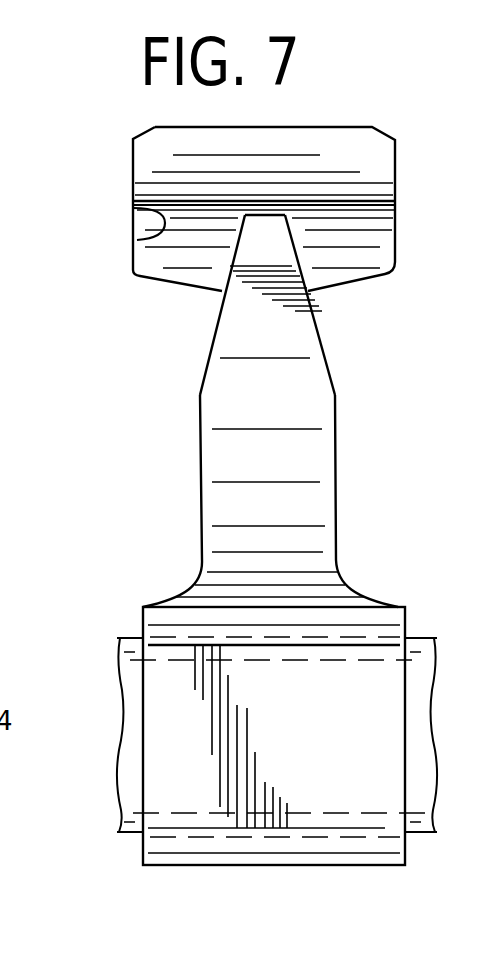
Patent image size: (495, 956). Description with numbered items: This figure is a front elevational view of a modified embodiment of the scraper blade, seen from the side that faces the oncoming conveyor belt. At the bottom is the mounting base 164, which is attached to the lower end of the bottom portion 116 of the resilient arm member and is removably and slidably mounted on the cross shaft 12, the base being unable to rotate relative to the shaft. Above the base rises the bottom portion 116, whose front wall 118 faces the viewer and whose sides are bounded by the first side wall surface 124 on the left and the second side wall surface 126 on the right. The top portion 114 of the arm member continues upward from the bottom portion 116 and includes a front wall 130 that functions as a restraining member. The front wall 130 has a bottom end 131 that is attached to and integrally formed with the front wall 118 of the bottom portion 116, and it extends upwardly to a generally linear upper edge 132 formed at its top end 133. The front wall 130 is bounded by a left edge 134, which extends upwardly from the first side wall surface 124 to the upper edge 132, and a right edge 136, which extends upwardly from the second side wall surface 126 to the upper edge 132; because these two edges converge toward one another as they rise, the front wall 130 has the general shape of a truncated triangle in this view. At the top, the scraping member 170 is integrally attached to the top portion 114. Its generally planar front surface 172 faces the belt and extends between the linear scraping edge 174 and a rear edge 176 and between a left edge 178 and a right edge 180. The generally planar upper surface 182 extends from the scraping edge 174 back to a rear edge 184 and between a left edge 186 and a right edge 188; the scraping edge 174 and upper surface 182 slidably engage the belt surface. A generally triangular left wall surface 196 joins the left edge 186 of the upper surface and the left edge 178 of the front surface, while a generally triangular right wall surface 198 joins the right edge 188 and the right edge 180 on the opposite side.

The cross shaft 12 is at (415, 636).
The top portion 114 is at (228, 338).
The bottom portion 116 is at (203, 431).
The front wall 118 is at (305, 452).
The first side wall surface 124 is at (207, 492).
The second side wall surface 126 is at (337, 468).
The front wall 130 is at (270, 330).
The bottom end 131 is at (297, 350).
The upper edge 132 is at (268, 216).
The top end 133 is at (285, 222).
The left edge 134 is at (212, 314).
The right edge 136 is at (303, 318).
The mounting base 164 is at (361, 700).
The scraping member 170 is at (440, 176).
The front surface 172 is at (150, 263).
The scraping edge 174 is at (147, 237).
The rear edge 176 is at (184, 287).
The left edge 178 is at (133, 275).
The right edge 180 is at (392, 263).
The upper surface 182 is at (398, 190).
The rear edge 184 is at (300, 127).
The left edge 186 is at (133, 163).
The right edge 188 is at (405, 141).
The left wall surface 196 is at (133, 193).
The right wall surface 198 is at (395, 205).